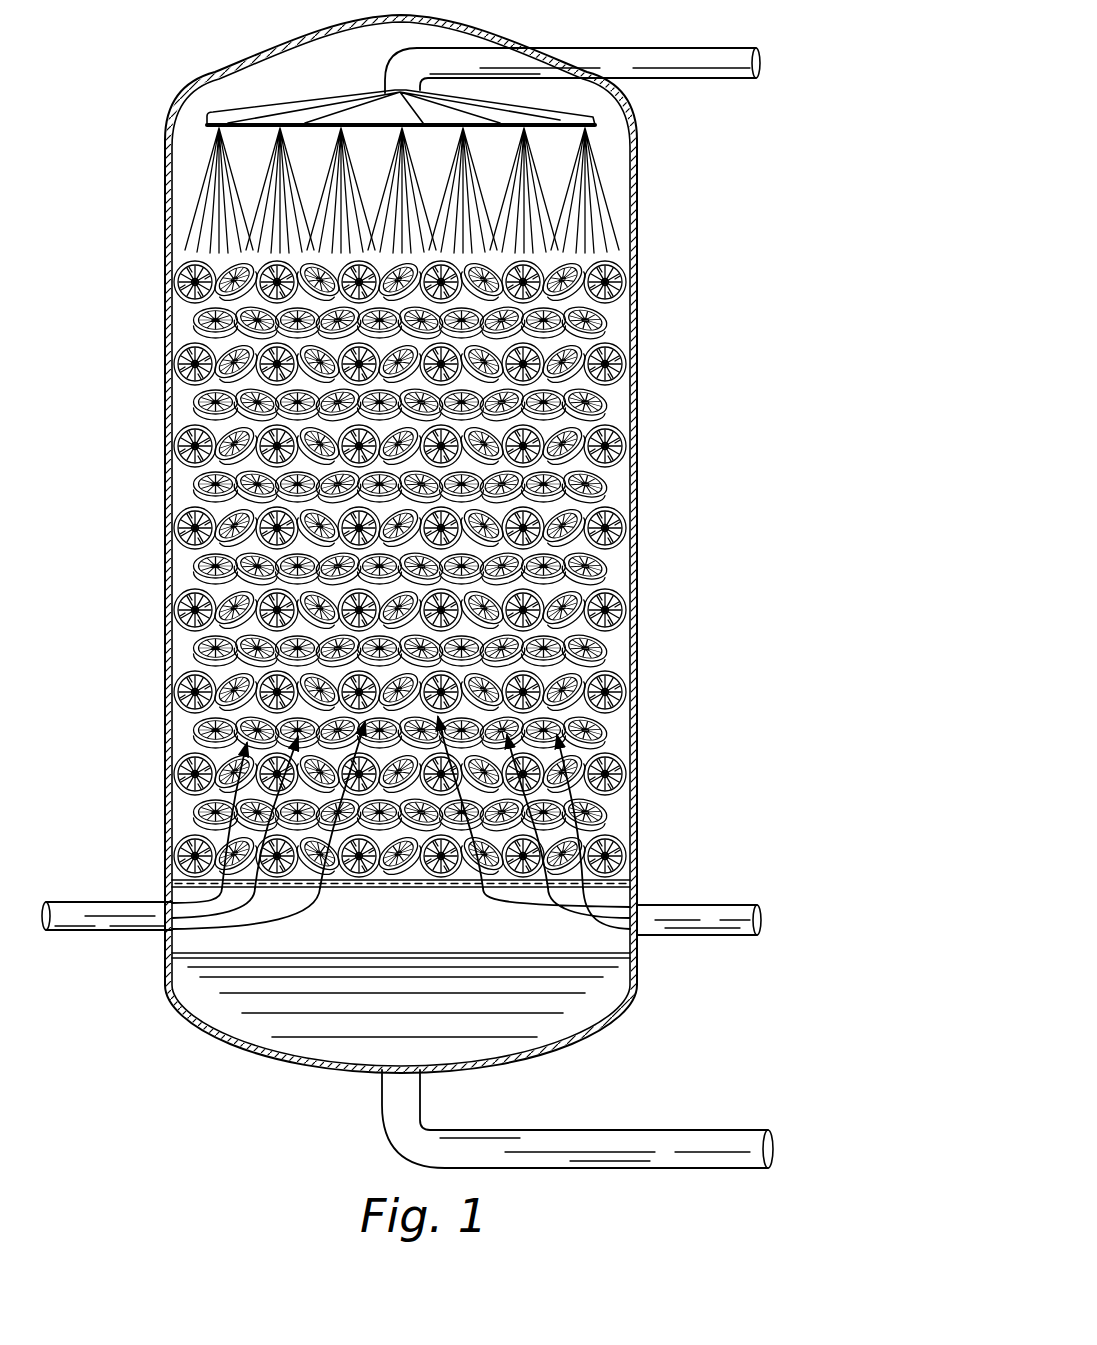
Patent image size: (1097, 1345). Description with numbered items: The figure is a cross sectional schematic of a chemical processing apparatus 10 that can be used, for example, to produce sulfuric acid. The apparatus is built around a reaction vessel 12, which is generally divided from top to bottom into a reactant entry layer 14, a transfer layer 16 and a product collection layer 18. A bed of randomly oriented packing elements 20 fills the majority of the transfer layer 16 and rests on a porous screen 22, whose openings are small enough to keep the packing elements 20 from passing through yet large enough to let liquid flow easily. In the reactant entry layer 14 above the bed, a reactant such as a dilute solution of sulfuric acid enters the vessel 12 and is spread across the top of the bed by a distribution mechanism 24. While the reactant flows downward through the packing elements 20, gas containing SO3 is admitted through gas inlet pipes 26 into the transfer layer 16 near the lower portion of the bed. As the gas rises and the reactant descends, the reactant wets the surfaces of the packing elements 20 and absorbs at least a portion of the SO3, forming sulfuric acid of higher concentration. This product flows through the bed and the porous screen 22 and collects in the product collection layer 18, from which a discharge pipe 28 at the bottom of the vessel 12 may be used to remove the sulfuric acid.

The chemical processing apparatus 10 is at (157, 85).
The reaction vessel 12 is at (165, 207).
The reactant entry layer 14 is at (665, 108).
The transfer layer 16 is at (407, 568).
The product collection layer 18 is at (665, 888).
The packing elements 20 is at (190, 400).
The porous screen 22 is at (400, 887).
The distribution mechanism 24 is at (308, 100).
The gas inlet pipes 26 is at (115, 910).
The discharge pipe 28 is at (712, 1135).